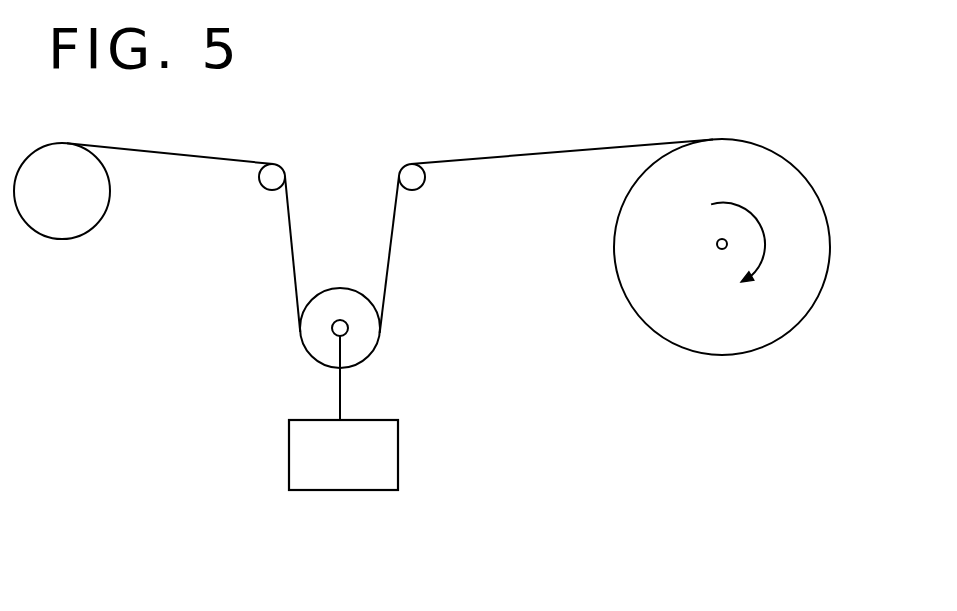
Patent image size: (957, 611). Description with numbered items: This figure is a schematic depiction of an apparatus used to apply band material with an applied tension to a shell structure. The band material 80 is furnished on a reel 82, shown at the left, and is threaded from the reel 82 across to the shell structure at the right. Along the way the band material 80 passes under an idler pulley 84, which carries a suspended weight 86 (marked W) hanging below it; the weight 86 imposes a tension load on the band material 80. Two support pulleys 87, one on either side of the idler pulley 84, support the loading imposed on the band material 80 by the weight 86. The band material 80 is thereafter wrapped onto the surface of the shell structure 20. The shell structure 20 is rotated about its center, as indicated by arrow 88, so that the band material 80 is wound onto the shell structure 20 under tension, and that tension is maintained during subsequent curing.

The shell structure 20 is at (785, 338).
The band material 80 is at (168, 153).
The reel 82 is at (53, 232).
The idler pulley 84 is at (368, 342).
The suspended weight 86 is at (289, 455).
The support pulleys 87 is at (273, 172).
The arrow 88 is at (760, 228).